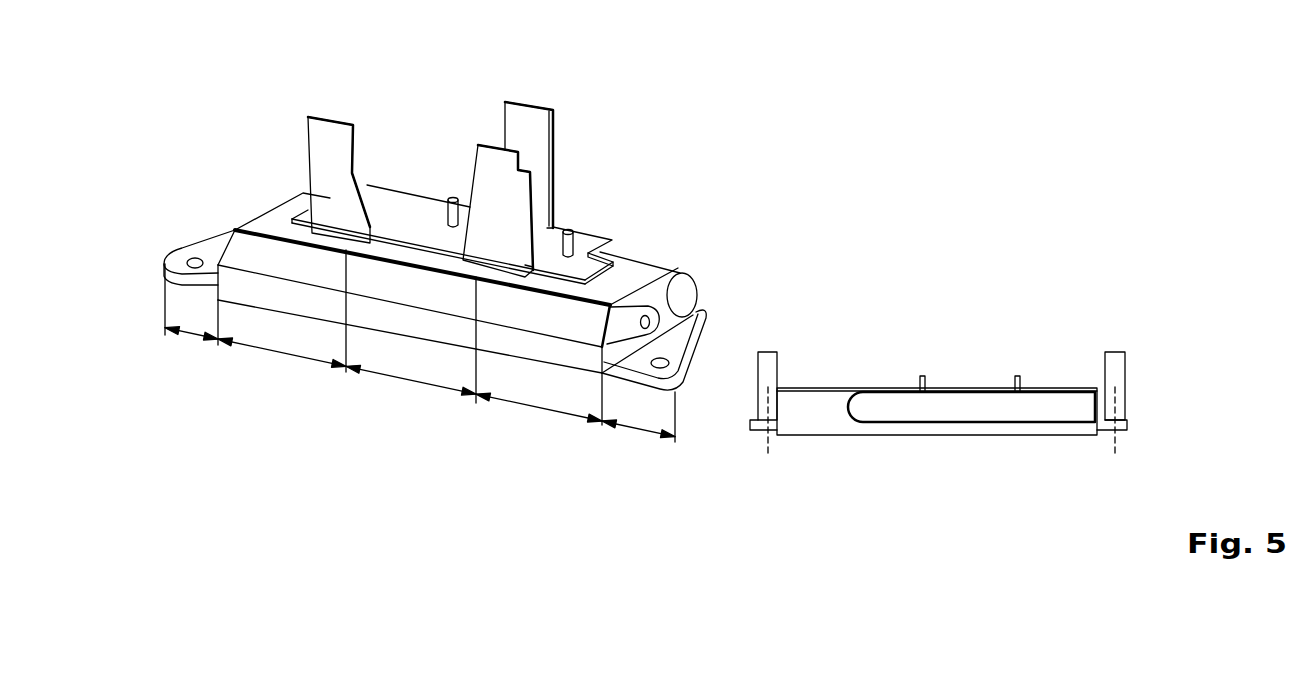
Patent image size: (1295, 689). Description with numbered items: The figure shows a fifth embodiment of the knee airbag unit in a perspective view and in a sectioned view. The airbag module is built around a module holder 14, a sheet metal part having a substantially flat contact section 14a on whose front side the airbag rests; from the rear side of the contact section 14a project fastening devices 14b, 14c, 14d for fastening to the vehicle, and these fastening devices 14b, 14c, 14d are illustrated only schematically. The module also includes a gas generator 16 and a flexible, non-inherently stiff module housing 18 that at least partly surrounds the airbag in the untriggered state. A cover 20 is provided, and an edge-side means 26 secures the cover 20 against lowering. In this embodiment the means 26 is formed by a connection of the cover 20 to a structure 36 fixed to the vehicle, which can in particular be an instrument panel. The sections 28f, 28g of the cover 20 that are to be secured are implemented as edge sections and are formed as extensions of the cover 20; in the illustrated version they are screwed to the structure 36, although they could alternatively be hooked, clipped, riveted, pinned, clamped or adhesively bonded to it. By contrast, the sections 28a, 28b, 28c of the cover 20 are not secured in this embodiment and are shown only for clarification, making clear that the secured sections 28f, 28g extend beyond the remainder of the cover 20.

The module holder 14 is at (405, 187).
The contact section 14a is at (432, 213).
The fastening device 14b is at (330, 135).
The fastening device 14c is at (497, 162).
The fastening device 14d is at (528, 118).
The gas generator 16 is at (687, 297).
The module housing 18 is at (270, 218).
The cover 20 is at (317, 293).
The means for securing the cover against lowering 26 is at (171, 232).
The section of the cover 28a is at (253, 347).
The section of the cover 28b is at (393, 380).
The section of the cover 28c is at (533, 410).
The section to be secured 28f is at (188, 335).
The section to be secured 28g is at (640, 433).
The structure fixed to the vehicle 36 is at (772, 372).